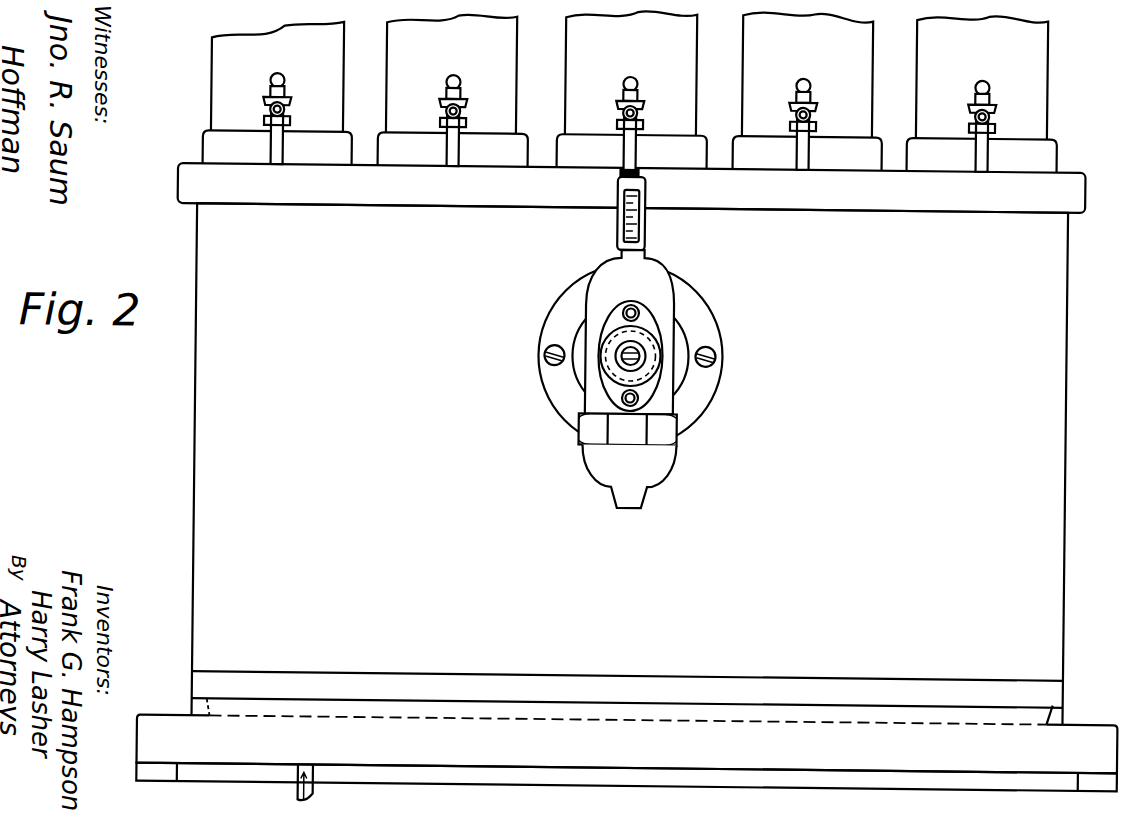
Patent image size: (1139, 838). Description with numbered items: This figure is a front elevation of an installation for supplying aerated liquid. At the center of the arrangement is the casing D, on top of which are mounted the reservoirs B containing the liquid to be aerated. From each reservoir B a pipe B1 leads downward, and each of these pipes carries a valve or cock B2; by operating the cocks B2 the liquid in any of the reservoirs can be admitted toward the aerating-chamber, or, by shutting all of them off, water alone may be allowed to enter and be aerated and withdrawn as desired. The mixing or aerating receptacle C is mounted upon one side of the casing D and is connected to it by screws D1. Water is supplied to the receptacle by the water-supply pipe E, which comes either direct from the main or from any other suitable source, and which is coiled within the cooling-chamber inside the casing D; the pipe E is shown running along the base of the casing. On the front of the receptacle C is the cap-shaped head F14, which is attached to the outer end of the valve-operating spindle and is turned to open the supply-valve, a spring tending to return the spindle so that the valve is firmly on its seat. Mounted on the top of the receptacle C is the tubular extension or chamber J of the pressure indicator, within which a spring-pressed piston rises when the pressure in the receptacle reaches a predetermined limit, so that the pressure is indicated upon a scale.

The reservoir B is at (631, 89).
The pipe B1 is at (276, 144).
The valve or cock B2 is at (968, 104).
The aerating-receptacle C is at (636, 378).
The casing D is at (630, 464).
The screw D1 is at (744, 336).
The water-supply pipe E is at (309, 776).
The cap-shaped head F14 is at (613, 363).
The tubular extension or chamber J is at (641, 227).